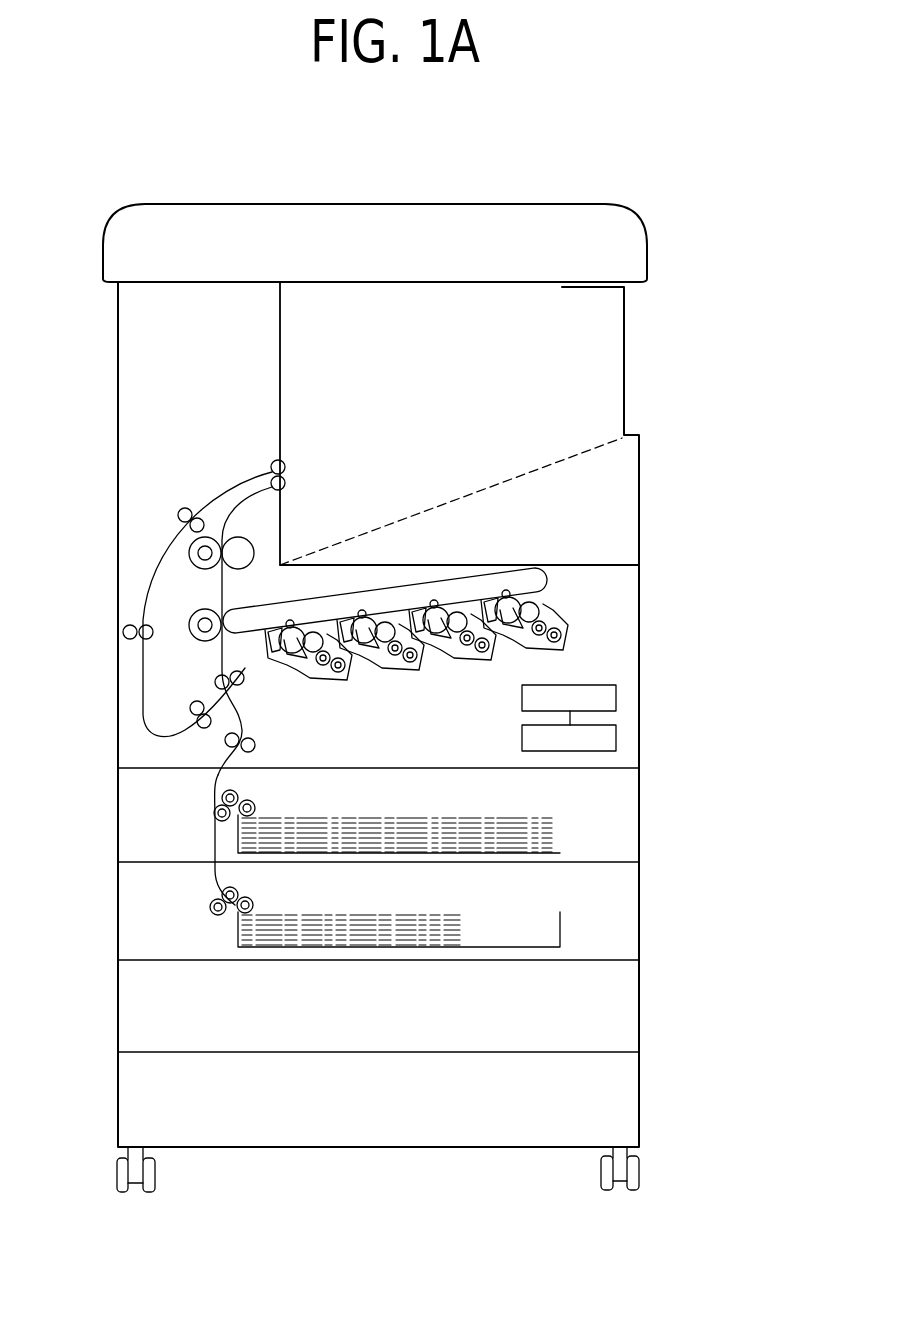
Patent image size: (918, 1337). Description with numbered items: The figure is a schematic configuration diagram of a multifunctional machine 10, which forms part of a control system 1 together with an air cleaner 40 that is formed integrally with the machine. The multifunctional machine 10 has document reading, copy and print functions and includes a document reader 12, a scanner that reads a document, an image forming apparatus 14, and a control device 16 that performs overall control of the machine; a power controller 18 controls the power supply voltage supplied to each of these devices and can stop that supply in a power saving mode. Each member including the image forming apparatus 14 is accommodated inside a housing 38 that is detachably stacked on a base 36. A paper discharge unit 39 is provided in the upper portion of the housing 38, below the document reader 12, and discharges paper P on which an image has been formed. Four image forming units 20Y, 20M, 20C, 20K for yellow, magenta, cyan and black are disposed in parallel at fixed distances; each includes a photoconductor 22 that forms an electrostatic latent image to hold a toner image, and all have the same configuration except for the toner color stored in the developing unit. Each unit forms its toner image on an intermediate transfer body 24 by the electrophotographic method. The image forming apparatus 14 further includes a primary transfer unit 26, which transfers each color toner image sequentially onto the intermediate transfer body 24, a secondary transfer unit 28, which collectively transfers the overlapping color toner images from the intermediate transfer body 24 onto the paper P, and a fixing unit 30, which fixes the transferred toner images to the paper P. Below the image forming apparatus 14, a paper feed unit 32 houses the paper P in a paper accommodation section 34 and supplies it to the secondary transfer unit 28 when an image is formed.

The control system 1 is at (445, 176).
The multifunctional machine 10 is at (568, 200).
The document reader 12 is at (174, 204).
The image forming apparatus 14 is at (590, 612).
The control device 16 is at (616, 735).
The power controller 18 is at (616, 690).
The image forming unit 20K is at (333, 682).
The image forming unit 20C is at (405, 672).
The image forming unit 20M is at (477, 665).
The image forming unit 20Y is at (541, 655).
The photoconductor 22 is at (279, 700).
The intermediate transfer body 24 is at (240, 609).
The primary transfer unit 26 is at (295, 624).
The secondary transfer unit 28 is at (192, 638).
The fixing unit 30 is at (182, 565).
The paper feed unit 32 is at (597, 908).
The paper accommodation section 34 is at (562, 835).
The base 36 is at (618, 1098).
The housing 38 is at (640, 635).
The paper discharge unit 39 is at (587, 442).
The air cleaner 40 is at (640, 1000).
The paper P is at (448, 815).